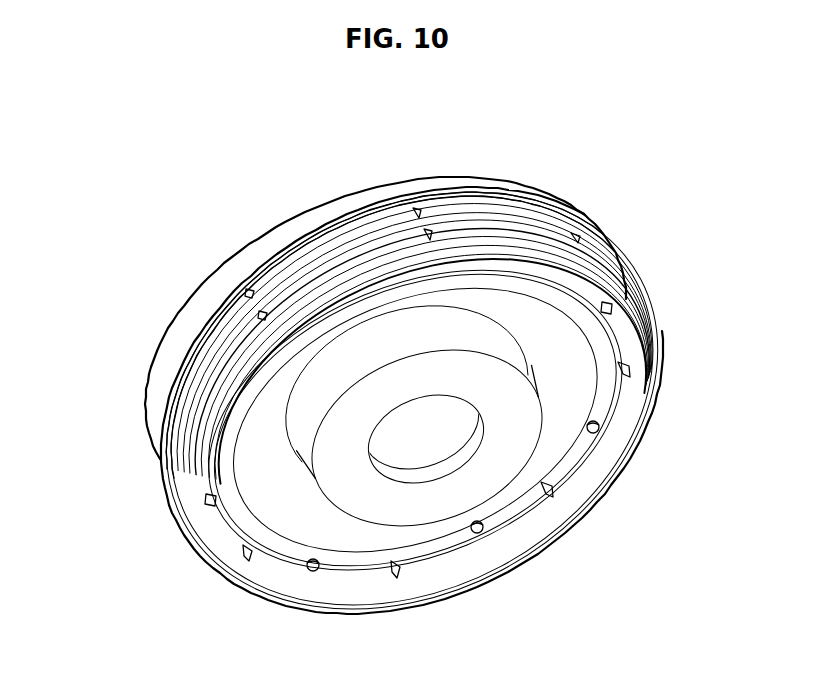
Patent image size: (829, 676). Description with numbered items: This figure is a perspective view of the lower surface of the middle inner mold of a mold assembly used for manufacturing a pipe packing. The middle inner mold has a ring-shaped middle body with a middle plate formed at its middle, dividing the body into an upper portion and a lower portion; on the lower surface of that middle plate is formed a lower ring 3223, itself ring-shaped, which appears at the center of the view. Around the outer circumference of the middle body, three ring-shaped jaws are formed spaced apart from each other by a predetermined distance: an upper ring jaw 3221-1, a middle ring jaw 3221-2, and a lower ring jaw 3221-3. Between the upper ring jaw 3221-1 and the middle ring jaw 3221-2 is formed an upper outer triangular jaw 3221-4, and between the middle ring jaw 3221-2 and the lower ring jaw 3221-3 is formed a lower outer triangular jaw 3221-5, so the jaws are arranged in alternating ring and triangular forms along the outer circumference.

The upper ring jaw 3221-1 is at (337, 213).
The middle ring jaw 3221-2 is at (575, 238).
The lower ring jaw 3221-3 is at (347, 295).
The upper outer triangular jaw 3221-4 is at (250, 293).
The lower outer triangular jaw 3221-5 is at (428, 235).
The lower ring 3223 is at (336, 483).